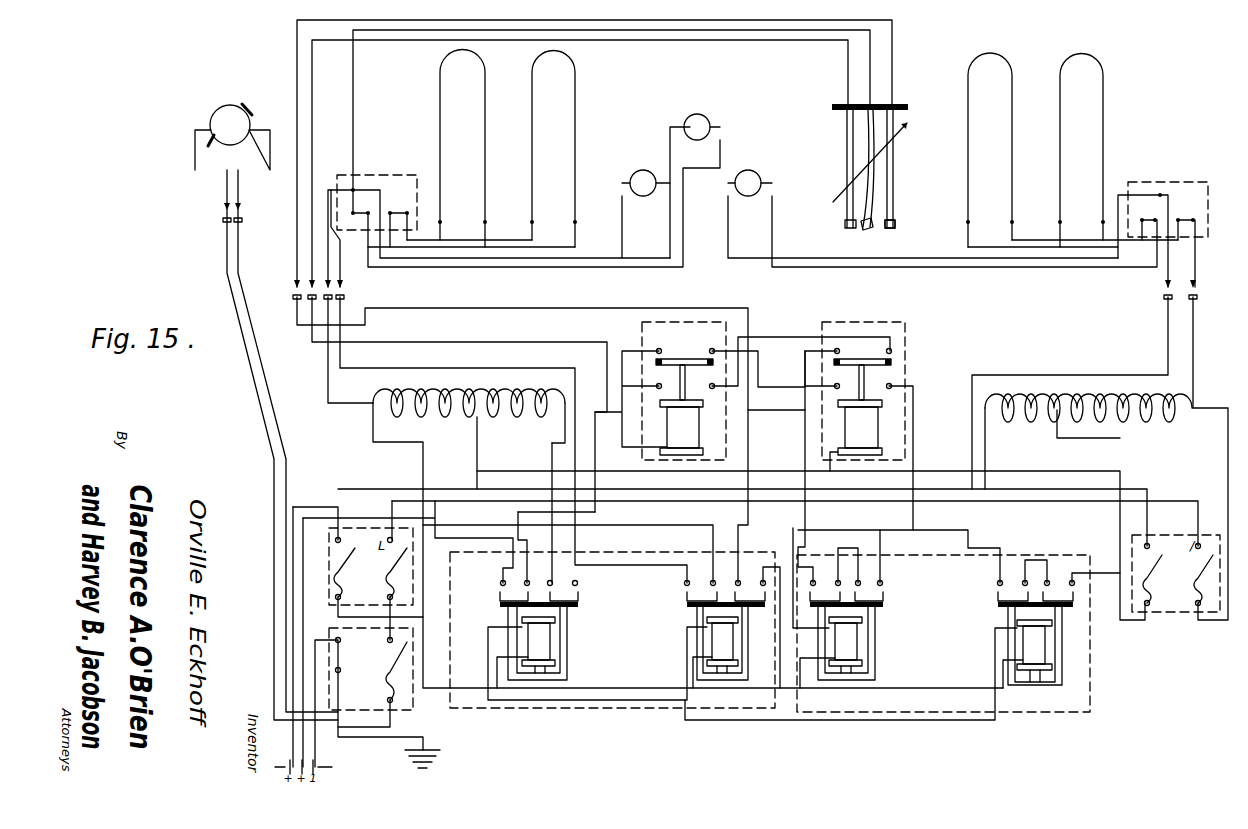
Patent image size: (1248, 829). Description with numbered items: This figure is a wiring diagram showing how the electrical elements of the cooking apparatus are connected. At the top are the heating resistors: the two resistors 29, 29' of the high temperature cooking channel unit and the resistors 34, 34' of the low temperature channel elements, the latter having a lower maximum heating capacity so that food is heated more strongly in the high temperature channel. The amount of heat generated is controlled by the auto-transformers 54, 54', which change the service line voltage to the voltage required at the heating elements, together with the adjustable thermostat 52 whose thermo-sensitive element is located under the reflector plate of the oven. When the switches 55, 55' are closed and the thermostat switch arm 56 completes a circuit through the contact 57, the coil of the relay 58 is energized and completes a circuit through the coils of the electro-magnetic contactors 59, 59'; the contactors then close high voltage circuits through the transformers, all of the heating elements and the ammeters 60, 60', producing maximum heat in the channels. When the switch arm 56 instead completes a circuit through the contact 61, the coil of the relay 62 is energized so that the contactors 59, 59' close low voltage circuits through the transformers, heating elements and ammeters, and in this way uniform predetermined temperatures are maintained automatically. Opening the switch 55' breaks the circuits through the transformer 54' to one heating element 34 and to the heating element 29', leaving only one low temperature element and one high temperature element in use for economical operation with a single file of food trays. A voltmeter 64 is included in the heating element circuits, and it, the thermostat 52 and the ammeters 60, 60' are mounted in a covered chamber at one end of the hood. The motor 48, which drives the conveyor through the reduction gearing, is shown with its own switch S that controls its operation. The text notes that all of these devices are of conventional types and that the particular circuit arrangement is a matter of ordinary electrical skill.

The motor 48 is at (214, 116).
The resistor 34 is at (462, 149).
The resistor 29 is at (553, 149).
The resistor 29' is at (990, 150).
The resistor 34' is at (1081, 151).
The ammeter 60 is at (642, 168).
The ammeter 60' is at (750, 168).
The voltmeter 64 is at (694, 115).
The adjustable thermostat 52 is at (834, 153).
The thermostat switch arm 56 is at (880, 168).
The contact 57 is at (852, 232).
The contact 61 is at (888, 232).
The auto-transformer 54 is at (469, 383).
The auto-transformer 54' is at (1088, 383).
The relay 58 is at (710, 425).
The relay 62 is at (890, 424).
The switch 55 is at (357, 566).
The switch 55' is at (1150, 571).
The switch S is at (386, 661).
The electro-magnetic contactor 59 is at (612, 630).
The electro-magnetic contactor 59' is at (943, 633).